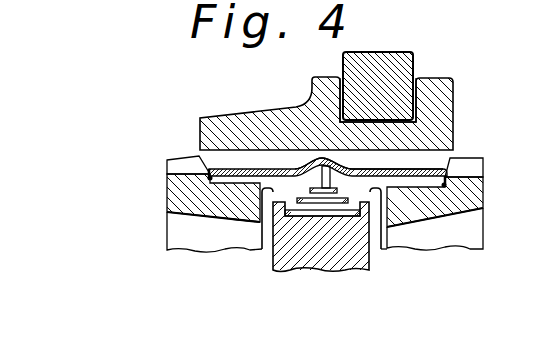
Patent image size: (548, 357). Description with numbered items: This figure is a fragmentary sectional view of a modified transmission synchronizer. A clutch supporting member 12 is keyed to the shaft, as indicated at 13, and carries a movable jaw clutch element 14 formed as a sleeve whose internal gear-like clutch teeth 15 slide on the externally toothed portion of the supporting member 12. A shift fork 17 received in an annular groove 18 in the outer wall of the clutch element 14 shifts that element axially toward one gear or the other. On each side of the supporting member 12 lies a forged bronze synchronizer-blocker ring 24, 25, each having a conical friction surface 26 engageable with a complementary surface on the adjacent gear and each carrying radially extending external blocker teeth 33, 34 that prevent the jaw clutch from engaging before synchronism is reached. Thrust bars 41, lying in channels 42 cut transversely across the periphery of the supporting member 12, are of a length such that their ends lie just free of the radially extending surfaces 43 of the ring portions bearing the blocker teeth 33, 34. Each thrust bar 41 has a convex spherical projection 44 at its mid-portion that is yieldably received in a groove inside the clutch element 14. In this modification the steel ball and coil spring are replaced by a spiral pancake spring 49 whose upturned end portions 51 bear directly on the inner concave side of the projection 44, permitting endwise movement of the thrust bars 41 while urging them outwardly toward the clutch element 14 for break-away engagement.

The clutch supporting member 12 is at (285, 270).
The key 13 is at (213, 188).
The movable jaw clutch element 14 is at (453, 82).
The internal clutch teeth 15 is at (224, 161).
The shift fork 17 is at (387, 73).
The annular groove 18 is at (350, 88).
The synchronizer-blocker ring 24 is at (193, 212).
The synchronizer-blocker ring 25 is at (465, 209).
The conical friction surface 26 is at (220, 220).
The blocker teeth 33 is at (180, 157).
The blocker teeth 34 is at (475, 162).
The thrust bar 41 is at (418, 168).
The channel 42 is at (244, 223).
The radially extending surface 43 is at (444, 186).
The convex spherical projection 44 is at (345, 171).
The spiral pancake spring 49 is at (332, 216).
The upturned end portion 51 is at (305, 168).